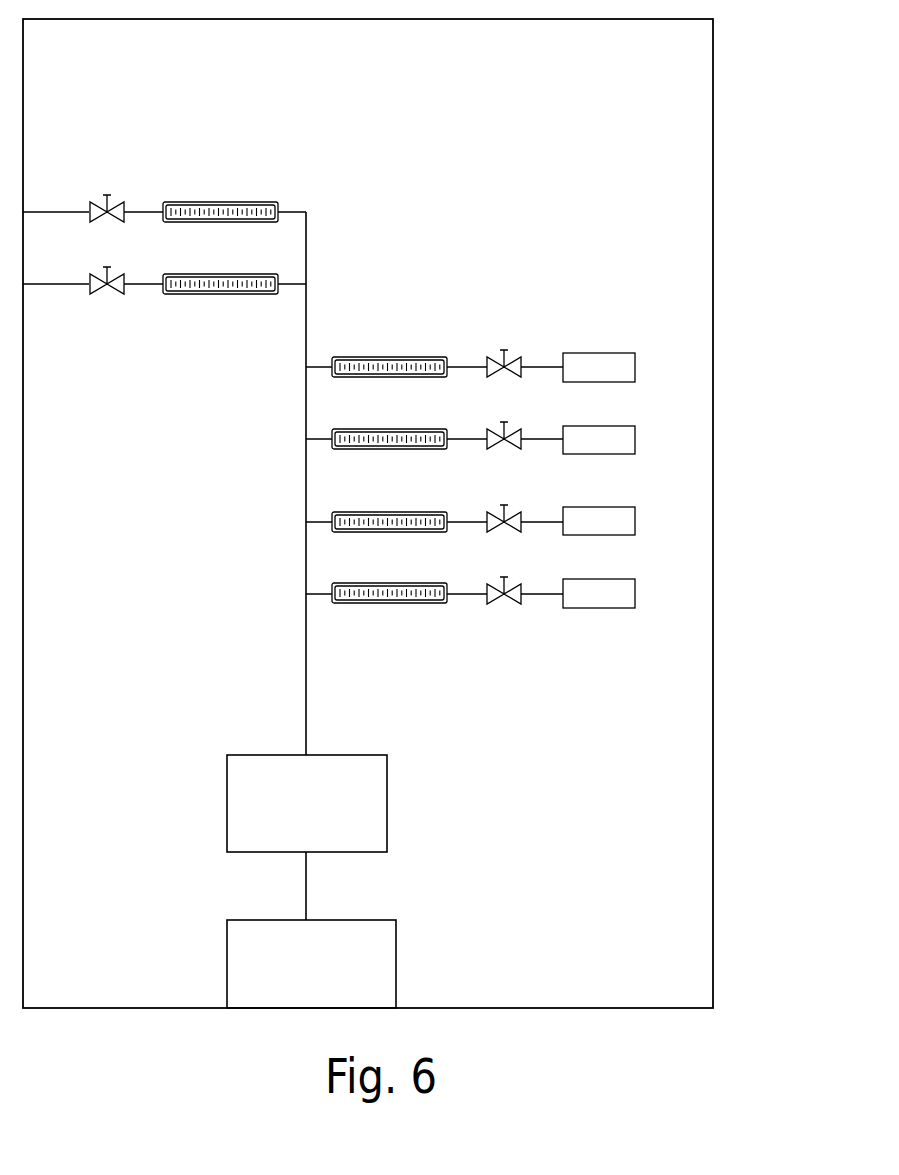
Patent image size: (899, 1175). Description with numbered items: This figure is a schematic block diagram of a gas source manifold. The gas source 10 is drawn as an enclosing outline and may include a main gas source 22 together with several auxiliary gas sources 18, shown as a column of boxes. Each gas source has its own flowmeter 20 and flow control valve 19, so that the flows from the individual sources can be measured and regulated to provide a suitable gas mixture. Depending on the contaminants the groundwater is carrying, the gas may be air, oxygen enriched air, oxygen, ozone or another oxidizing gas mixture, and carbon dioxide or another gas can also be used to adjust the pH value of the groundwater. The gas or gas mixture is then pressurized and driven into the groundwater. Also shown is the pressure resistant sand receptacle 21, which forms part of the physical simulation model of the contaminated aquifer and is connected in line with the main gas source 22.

The gas source 10 is at (713, 415).
The auxiliary gas sources 18 is at (636, 369).
The flow control valve 19 is at (123, 222).
The flowmeter 20 is at (407, 582).
The pressure resistant sand receptacle 21 is at (387, 807).
The main gas source 22 is at (396, 973).